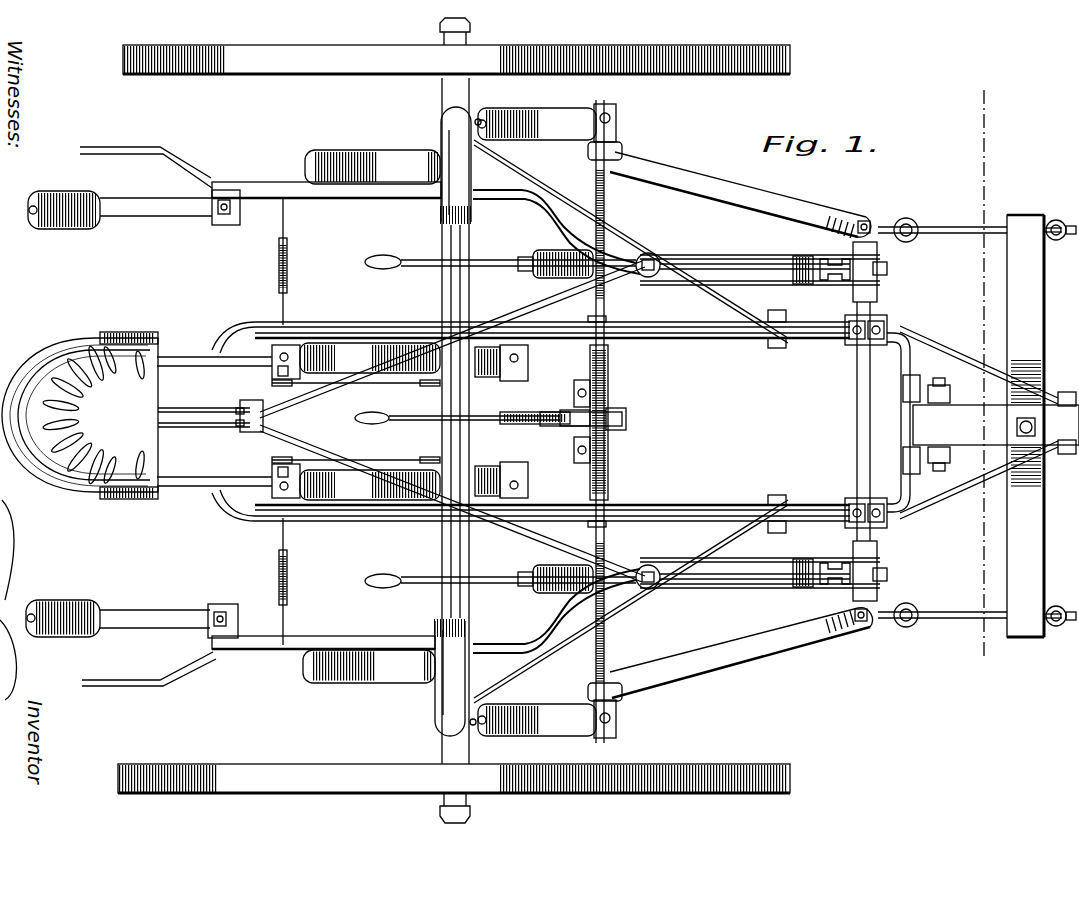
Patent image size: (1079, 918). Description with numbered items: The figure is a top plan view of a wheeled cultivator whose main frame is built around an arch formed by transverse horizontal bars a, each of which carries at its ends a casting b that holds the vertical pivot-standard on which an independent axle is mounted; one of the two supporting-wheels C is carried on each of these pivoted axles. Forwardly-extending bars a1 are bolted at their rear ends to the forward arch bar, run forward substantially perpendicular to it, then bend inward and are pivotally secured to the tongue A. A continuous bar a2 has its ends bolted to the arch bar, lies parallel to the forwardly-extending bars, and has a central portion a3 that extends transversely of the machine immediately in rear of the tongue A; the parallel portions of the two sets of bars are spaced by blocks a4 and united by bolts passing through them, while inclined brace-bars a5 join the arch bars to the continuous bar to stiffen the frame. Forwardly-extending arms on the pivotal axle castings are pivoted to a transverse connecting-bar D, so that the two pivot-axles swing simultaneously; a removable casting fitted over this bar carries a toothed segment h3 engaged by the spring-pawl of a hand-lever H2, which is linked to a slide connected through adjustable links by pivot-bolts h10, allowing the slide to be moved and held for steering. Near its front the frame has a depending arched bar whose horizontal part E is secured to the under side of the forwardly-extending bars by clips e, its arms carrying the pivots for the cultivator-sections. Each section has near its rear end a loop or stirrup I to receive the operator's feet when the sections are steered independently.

The supporting-wheels C is at (473, 37).
The transverse horizontal bars of the arch a is at (542, 115).
The casting b is at (448, 145).
The loop or stirrup I is at (285, 260).
The blocks a4 is at (608, 348).
The continuous bar a2 is at (728, 338).
The forwardly-extending bars of the main frame a1 is at (780, 340).
The inclined brace-bars a5 is at (650, 318).
The hand-lever H2 is at (435, 447).
The segment h3 is at (610, 407).
The pivot-bolt h10 is at (625, 425).
The transverse connecting-bar D is at (607, 640).
The horizontal part of the arched bar E is at (855, 400).
The clips e is at (888, 318).
The central portion a3 is at (903, 427).
The tongue A is at (1063, 392).